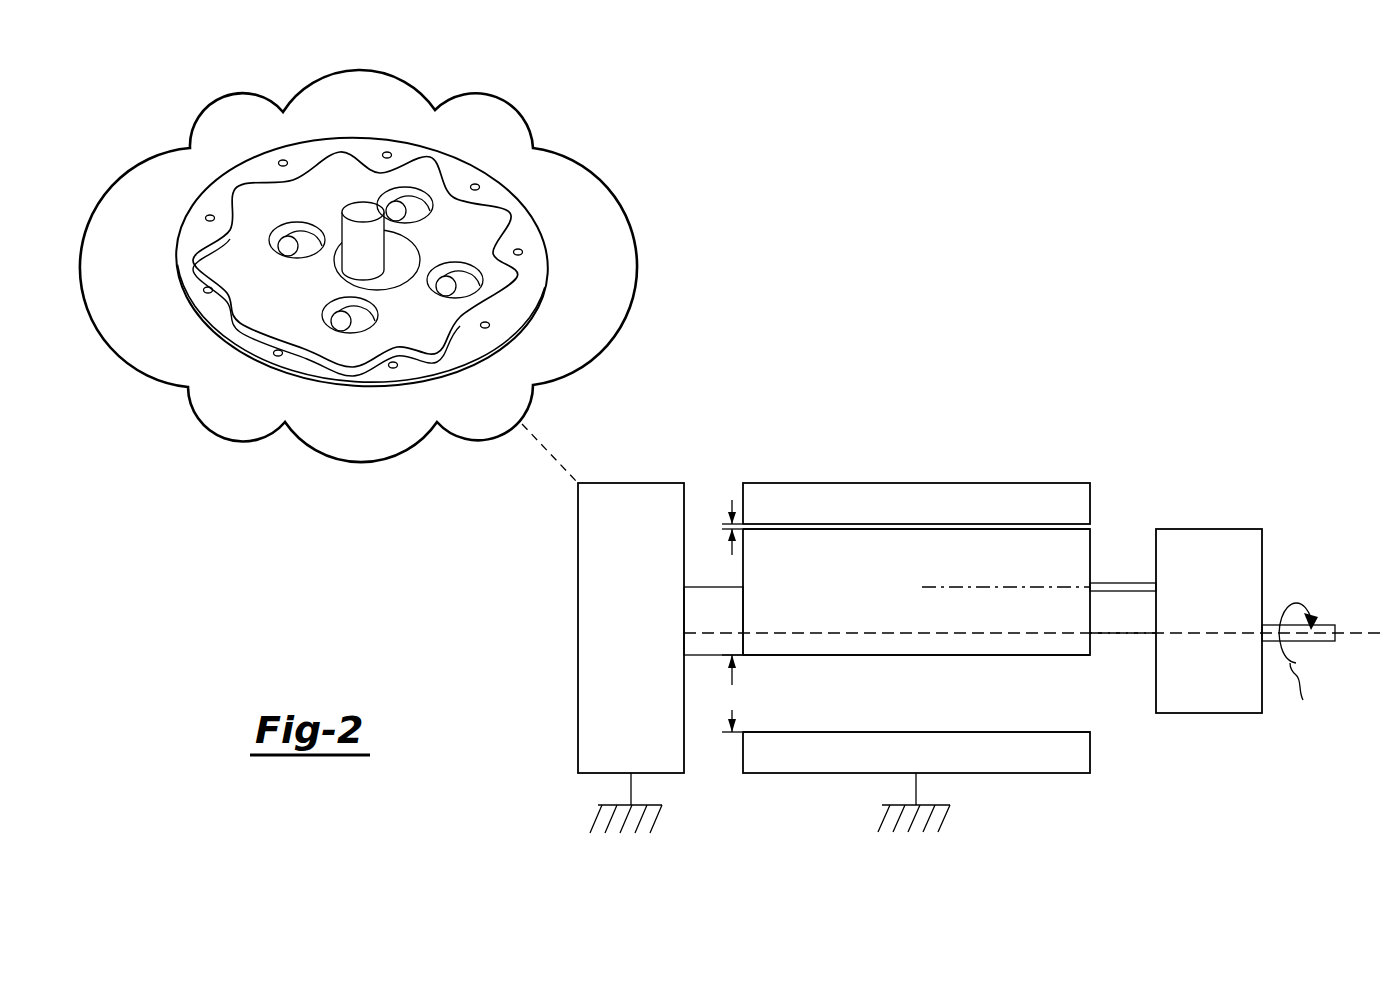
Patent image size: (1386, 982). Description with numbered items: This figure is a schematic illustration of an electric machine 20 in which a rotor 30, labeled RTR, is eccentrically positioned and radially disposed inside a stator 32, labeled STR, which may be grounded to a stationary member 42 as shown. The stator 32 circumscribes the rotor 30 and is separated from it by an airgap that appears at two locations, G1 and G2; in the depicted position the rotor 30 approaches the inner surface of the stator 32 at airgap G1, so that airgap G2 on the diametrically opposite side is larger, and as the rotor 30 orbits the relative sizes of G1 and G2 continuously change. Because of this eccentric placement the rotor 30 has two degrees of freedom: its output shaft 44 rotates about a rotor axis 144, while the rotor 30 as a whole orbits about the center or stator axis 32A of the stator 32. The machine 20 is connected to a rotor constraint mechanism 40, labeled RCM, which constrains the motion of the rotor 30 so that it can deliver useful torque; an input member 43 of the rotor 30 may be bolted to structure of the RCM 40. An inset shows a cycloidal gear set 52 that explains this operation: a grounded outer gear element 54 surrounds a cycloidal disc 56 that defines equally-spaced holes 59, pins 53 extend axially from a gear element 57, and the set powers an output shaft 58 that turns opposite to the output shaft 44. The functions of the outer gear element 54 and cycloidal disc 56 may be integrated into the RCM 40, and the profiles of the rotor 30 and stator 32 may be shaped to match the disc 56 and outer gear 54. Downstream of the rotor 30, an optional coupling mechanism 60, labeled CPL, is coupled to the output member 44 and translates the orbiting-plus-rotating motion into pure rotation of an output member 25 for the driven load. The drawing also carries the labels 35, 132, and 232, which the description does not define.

The electric machine 20 is at (1086, 356).
The output member 25 is at (1322, 624).
The rotor 30 is at (829, 600).
The stator 32 is at (1030, 519).
The stator axis 32A is at (1123, 640).
The rotor bottom surface 35 is at (985, 655).
The rotor constraint mechanism 40 is at (578, 573).
The stationary member 42 is at (588, 817).
The input member 43 is at (713, 587).
The output shaft 44 is at (1121, 583).
The cycloidal gear set 52 is at (604, 146).
The pins 53 is at (337, 315).
The outer gear element 54 is at (268, 167).
The cycloidal disc 56 is at (252, 303).
The gear element 57 is at (462, 280).
The output shaft 58 is at (364, 210).
The holes 59 is at (360, 320).
The coupling mechanism 60 is at (1228, 529).
The rotor first side 132 is at (1080, 528).
The rotor axis 144 is at (975, 586).
The second stator side 232 is at (1070, 732).
The airgap G1 is at (732, 500).
The airgap G2 is at (732, 693).